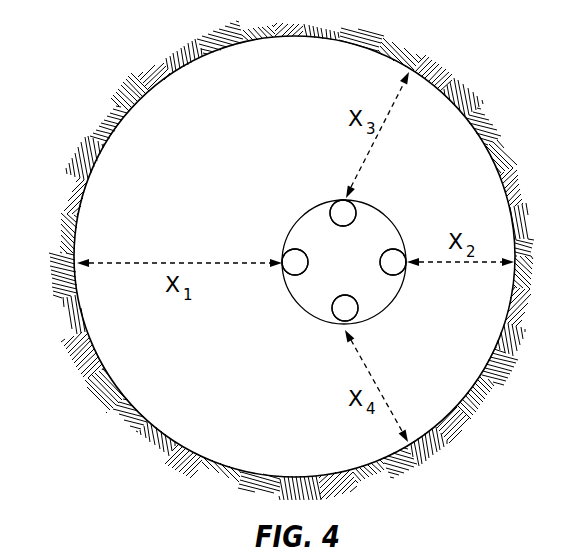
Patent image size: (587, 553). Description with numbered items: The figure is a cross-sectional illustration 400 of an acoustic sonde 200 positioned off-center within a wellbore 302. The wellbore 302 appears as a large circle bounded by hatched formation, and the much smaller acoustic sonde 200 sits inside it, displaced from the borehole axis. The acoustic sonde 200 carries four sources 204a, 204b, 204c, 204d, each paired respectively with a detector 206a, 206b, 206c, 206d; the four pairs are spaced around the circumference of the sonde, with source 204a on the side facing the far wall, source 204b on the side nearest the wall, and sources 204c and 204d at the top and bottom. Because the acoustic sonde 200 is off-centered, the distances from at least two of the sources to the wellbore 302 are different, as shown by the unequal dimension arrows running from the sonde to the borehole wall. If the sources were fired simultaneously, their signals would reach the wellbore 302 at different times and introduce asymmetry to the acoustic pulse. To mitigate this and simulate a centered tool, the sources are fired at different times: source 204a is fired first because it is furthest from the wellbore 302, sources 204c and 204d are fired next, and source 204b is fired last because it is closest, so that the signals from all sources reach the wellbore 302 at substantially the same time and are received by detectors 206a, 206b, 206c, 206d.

The cross-sectional illustration 400 is at (104, 56).
The wellbore 302 is at (488, 146).
The acoustic sonde 200 is at (373, 318).
The source 204a is at (295, 262).
The source 204b is at (393, 262).
The source 204c is at (343, 213).
The source 204d is at (345, 309).
The detector 206a is at (287, 253).
The detector 206b is at (400, 273).
The detector 206c is at (356, 217).
The detector 206d is at (332, 310).